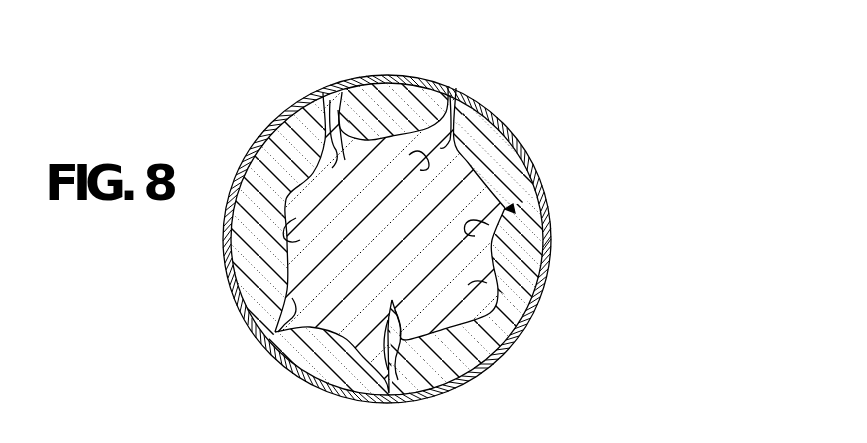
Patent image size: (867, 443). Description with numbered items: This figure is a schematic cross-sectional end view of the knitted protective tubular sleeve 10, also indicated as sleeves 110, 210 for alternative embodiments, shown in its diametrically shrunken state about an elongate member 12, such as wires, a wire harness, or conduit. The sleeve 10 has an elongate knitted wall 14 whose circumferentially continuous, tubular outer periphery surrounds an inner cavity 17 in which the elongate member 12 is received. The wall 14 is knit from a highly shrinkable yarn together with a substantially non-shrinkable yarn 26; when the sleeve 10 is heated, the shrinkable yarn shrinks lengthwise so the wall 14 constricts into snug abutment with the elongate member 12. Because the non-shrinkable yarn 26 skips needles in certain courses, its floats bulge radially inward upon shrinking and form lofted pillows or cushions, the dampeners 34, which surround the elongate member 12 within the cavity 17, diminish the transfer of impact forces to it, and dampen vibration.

The sleeve 10 is at (424, 211).
The article (second embodiment) 110 is at (711, 76).
The article (third embodiment) 210 is at (754, 76).
The elongate member 12 is at (342, 112).
The knitted wall 14 is at (318, 97).
The inner cavity 17 is at (508, 211).
The non-shrinkable yarn 26 is at (385, 110).
The dampeners 34 is at (328, 160).